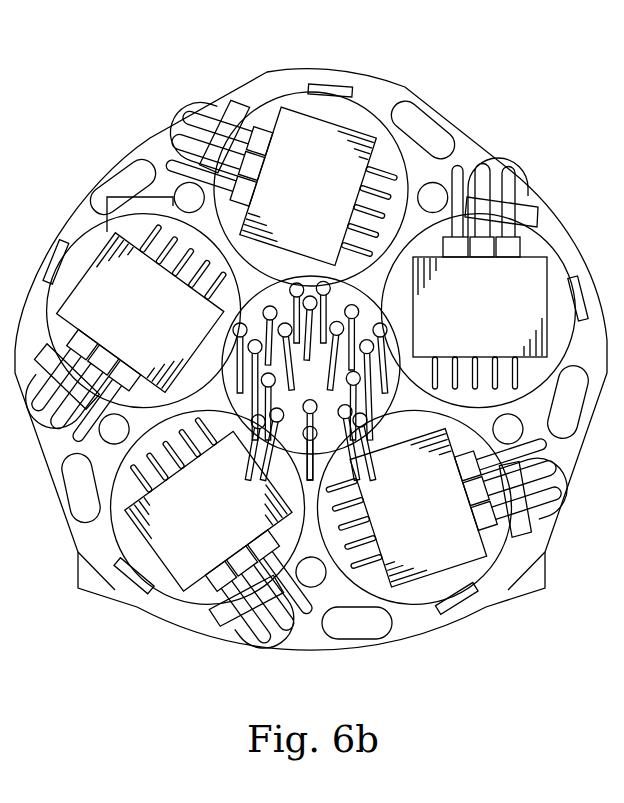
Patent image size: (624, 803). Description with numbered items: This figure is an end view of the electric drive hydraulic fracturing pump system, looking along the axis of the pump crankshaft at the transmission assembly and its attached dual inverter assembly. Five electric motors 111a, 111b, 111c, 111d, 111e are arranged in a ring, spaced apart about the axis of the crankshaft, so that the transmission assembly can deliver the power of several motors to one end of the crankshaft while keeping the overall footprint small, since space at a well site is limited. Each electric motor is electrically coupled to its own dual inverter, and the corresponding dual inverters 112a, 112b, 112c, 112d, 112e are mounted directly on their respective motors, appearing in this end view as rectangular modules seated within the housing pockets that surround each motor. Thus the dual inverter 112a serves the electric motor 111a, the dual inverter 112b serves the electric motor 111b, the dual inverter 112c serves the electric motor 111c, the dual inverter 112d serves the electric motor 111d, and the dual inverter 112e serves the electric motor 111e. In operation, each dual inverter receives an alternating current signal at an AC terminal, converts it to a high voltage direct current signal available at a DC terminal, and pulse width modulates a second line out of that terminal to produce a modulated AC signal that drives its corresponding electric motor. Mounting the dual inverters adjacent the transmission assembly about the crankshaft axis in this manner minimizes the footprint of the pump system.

The electric motor 111a is at (290, 92).
The electric motor 111b is at (547, 240).
The electric motor 111c is at (422, 613).
The electric motor 111d is at (193, 613).
The electric motor 111e is at (83, 227).
The dual inverter 112a is at (277, 202).
The dual inverter 112b is at (449, 323).
The dual inverter 112c is at (387, 524).
The dual inverter 112d is at (177, 527).
The dual inverter 112e is at (109, 328).